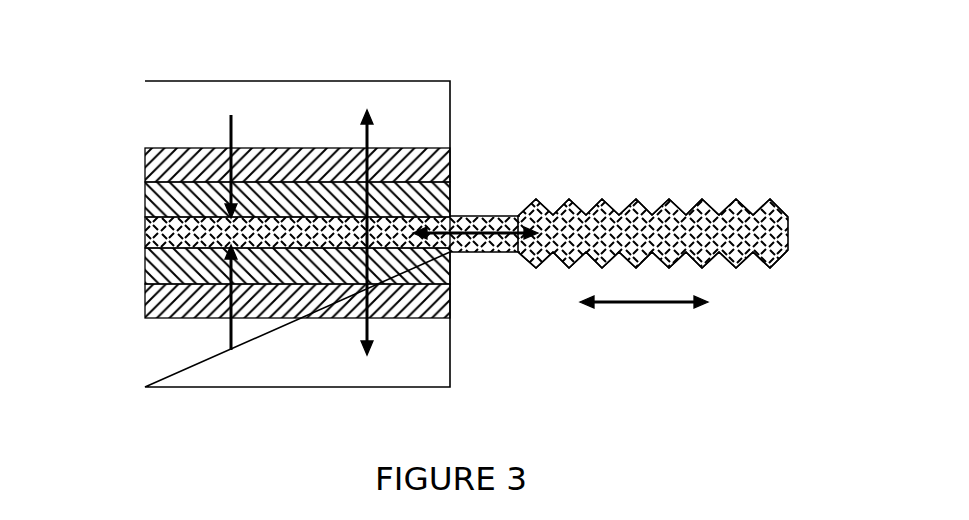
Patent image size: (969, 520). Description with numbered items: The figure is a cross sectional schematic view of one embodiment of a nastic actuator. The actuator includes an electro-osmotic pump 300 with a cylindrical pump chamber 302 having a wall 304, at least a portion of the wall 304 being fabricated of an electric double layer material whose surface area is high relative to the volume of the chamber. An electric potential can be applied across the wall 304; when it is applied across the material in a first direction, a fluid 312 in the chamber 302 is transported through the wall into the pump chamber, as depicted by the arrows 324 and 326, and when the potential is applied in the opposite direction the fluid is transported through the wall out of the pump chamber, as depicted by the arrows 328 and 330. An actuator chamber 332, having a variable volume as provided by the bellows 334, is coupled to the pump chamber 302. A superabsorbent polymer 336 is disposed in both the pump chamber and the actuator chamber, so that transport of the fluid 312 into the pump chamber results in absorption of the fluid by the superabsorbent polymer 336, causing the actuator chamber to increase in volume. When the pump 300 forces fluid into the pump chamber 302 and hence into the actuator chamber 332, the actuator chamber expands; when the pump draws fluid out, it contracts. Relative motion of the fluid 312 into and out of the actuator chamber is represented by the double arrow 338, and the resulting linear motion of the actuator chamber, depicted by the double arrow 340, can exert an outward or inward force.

The electro-osmotic pump 300 is at (322, 58).
The cylindrical pump chamber 302 is at (127, 212).
The wall 304 is at (158, 159).
The fluid 312 is at (158, 270).
The arrow 324 is at (229, 135).
The arrow 326 is at (230, 344).
The arrow 328 is at (372, 135).
The arrow 330 is at (370, 323).
The actuator chamber 332 is at (815, 247).
The bellows 334 is at (584, 205).
The superabsorbent polymer 336 is at (548, 256).
The double arrow 338 is at (478, 216).
The double arrow 340 is at (643, 303).